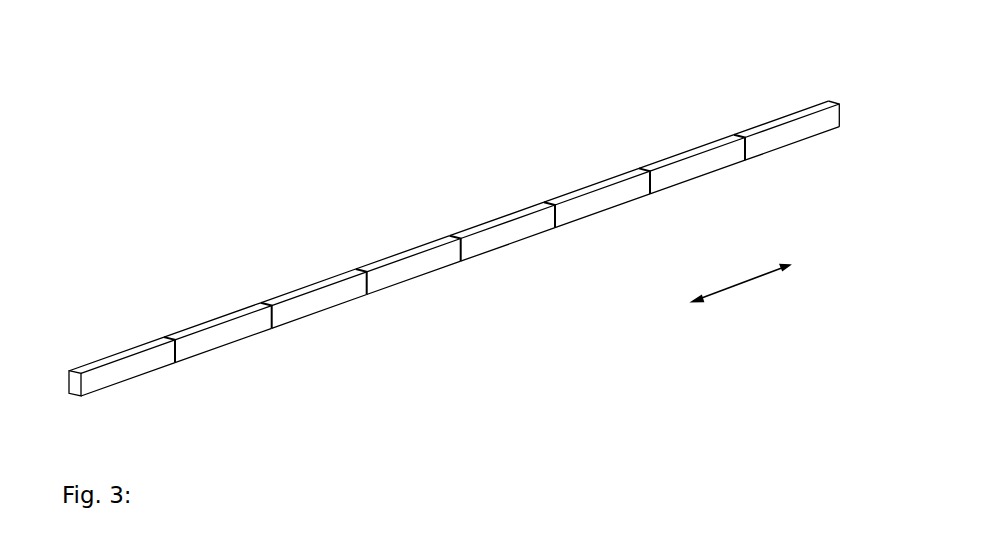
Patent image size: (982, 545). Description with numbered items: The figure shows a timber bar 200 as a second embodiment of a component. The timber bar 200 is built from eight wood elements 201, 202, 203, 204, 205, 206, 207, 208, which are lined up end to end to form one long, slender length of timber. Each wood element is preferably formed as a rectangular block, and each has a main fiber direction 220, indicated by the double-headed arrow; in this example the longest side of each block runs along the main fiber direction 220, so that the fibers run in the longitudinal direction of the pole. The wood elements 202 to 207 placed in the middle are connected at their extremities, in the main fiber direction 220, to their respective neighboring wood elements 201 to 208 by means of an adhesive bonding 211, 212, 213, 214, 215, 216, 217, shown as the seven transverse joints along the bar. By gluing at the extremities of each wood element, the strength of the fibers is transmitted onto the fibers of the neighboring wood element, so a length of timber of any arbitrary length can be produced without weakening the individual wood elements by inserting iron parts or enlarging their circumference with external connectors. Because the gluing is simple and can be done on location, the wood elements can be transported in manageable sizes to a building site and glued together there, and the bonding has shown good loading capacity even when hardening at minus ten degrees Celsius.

The timber bar 200 is at (235, 124).
The wood element 201 is at (122, 355).
The wood element 202 is at (235, 313).
The wood element 203 is at (308, 293).
The wood element 204 is at (422, 267).
The wood element 205 is at (502, 222).
The wood element 206 is at (603, 187).
The wood element 207 is at (702, 155).
The wood element 208 is at (807, 107).
The adhesive bonding 211 is at (175, 360).
The adhesive bonding 212 is at (270, 327).
The adhesive bonding 213 is at (368, 295).
The adhesive bonding 214 is at (462, 262).
The adhesive bonding 215 is at (555, 223).
The adhesive bonding 216 is at (652, 190).
The adhesive bonding 217 is at (747, 160).
The main fiber direction 220 is at (738, 287).